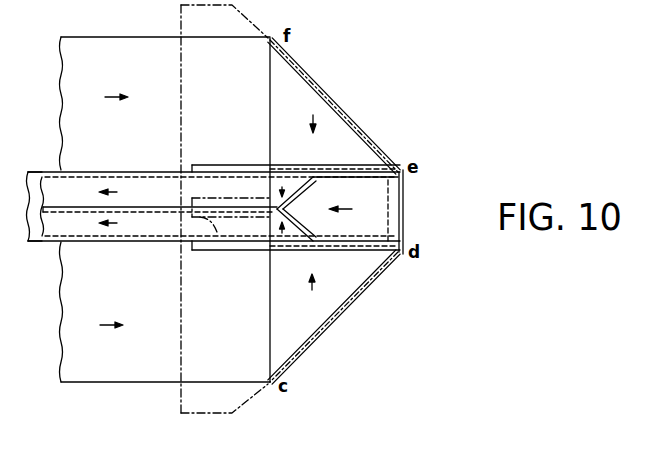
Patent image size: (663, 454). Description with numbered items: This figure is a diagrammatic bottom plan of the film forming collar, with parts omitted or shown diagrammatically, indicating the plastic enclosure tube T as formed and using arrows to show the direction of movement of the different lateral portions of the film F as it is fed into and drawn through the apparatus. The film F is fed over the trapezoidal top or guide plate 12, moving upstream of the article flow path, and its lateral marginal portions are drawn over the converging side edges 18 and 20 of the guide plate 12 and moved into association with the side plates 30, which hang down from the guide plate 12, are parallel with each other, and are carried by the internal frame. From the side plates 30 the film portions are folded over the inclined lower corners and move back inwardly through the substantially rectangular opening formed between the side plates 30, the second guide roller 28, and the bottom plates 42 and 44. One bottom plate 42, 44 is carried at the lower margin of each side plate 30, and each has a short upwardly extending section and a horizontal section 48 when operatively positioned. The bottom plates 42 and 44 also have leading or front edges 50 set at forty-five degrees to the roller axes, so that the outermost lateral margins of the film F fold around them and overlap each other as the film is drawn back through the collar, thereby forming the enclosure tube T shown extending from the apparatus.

The top or guide plate 12 is at (240, 25).
The side edge 18 is at (318, 88).
The side edge 20 is at (351, 298).
The second guide roller 28 is at (392, 217).
The side plates 30 is at (219, 196).
The bottom plate 42 is at (241, 247).
The bottom plate 44 is at (244, 192).
The horizontal section 48 is at (306, 237).
The leading or front edges 50 is at (296, 200).
The film F is at (131, 43).
The enclosure tube T is at (52, 183).